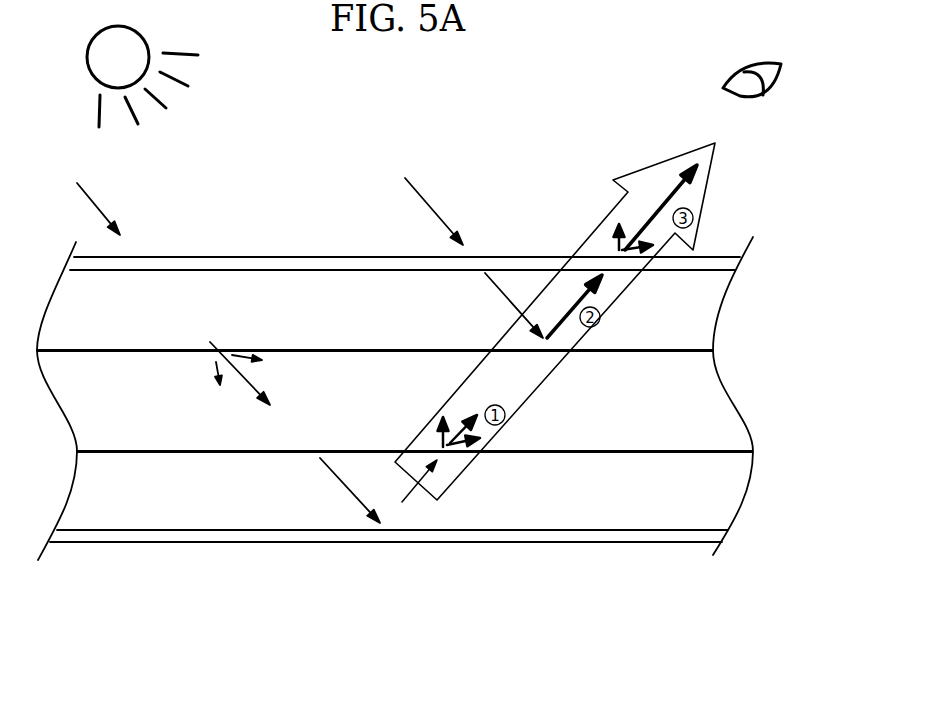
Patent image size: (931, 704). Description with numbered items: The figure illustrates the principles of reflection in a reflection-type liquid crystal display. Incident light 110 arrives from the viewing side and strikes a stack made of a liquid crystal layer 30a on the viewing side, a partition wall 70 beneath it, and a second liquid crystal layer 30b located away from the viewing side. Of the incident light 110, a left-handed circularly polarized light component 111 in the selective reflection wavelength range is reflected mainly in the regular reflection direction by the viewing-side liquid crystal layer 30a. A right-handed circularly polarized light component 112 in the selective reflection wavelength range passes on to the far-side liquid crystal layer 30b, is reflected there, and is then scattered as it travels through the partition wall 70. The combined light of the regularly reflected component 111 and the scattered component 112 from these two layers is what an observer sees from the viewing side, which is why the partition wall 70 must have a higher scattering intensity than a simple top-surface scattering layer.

The liquid crystal layer 30a is at (707, 298).
The liquid crystal layer 30b is at (707, 485).
The partition wall 70 is at (715, 383).
The incident light 110 is at (97, 207).
The left-handed circularly polarized light component 111 is at (562, 313).
The right-handed circularly polarized light component 112 is at (462, 450).